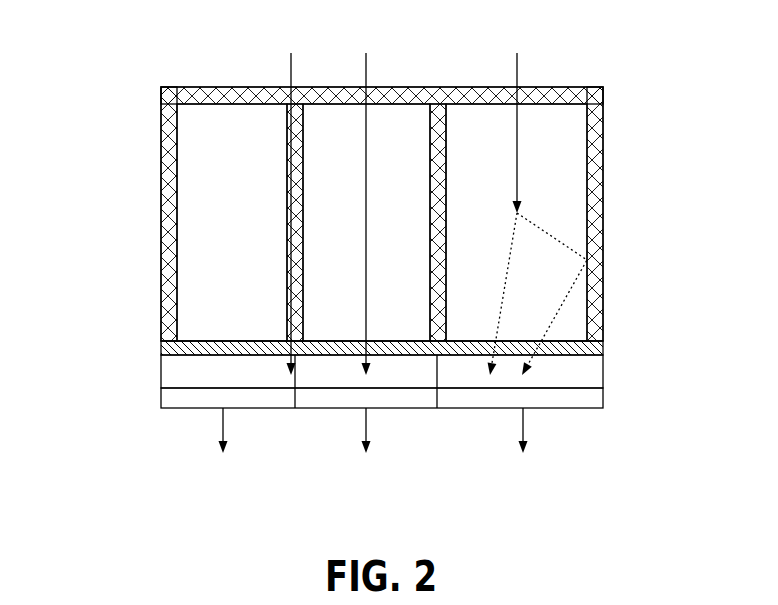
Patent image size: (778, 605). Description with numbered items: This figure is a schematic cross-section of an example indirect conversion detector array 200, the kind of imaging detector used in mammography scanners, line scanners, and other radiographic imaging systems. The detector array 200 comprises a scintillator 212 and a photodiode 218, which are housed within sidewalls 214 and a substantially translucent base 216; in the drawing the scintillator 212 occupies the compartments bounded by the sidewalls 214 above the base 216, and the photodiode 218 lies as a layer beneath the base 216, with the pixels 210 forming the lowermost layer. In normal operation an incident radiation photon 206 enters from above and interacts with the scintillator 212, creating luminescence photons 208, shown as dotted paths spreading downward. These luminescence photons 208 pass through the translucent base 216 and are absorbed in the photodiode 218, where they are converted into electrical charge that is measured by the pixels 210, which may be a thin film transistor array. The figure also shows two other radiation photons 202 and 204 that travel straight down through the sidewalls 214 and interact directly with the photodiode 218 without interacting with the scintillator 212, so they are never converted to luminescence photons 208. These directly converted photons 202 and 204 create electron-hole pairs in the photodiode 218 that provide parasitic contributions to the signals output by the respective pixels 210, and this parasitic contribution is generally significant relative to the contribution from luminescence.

The indirect conversion detector array 200 is at (126, 47).
The radiation photon 202 is at (291, 73).
The radiation photon 204 is at (366, 73).
The incident radiation photon 206 is at (517, 73).
The luminescence photons 208 is at (513, 238).
The pixels 210 is at (604, 397).
The scintillator 212 is at (207, 188).
The sidewalls 214 is at (604, 116).
The substantially translucent base 216 is at (604, 343).
The photodiode 218 is at (604, 370).